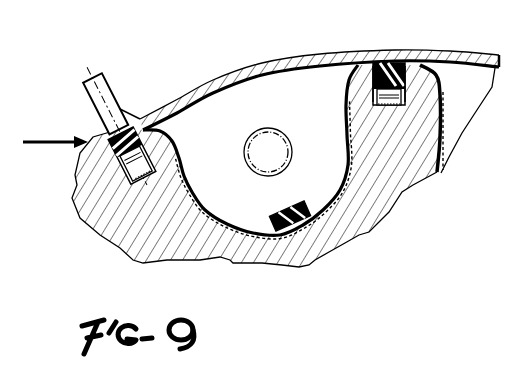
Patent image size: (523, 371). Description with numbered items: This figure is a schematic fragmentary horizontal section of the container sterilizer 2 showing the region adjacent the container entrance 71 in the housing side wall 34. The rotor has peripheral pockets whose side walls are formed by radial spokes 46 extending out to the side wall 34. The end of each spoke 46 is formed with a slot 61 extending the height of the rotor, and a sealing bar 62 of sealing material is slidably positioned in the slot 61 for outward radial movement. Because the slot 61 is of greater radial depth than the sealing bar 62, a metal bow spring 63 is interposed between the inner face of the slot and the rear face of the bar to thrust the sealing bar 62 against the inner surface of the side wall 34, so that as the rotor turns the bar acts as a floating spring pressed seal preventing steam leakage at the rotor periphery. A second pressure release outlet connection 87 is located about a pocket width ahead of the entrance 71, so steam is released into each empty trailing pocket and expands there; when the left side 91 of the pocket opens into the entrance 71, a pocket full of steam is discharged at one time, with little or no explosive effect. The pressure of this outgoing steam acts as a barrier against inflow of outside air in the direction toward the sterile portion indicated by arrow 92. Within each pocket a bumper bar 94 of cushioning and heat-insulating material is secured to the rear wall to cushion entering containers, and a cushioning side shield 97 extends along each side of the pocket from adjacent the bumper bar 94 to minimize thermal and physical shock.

The container sterilizer 2 is at (312, 52).
The side wall 34 is at (463, 37).
The radial spoke 46 is at (364, 136).
The slot 61 is at (405, 88).
The sealing bar 62 is at (112, 148).
The bow spring 63 is at (373, 88).
The entrance 71 is at (80, 103).
The second pressure release outlet connection 87 is at (270, 128).
The left side of pocket 91 is at (172, 139).
The arrow 92 is at (43, 118).
The bumper bar 94 is at (278, 211).
The side shield 97 is at (187, 168).